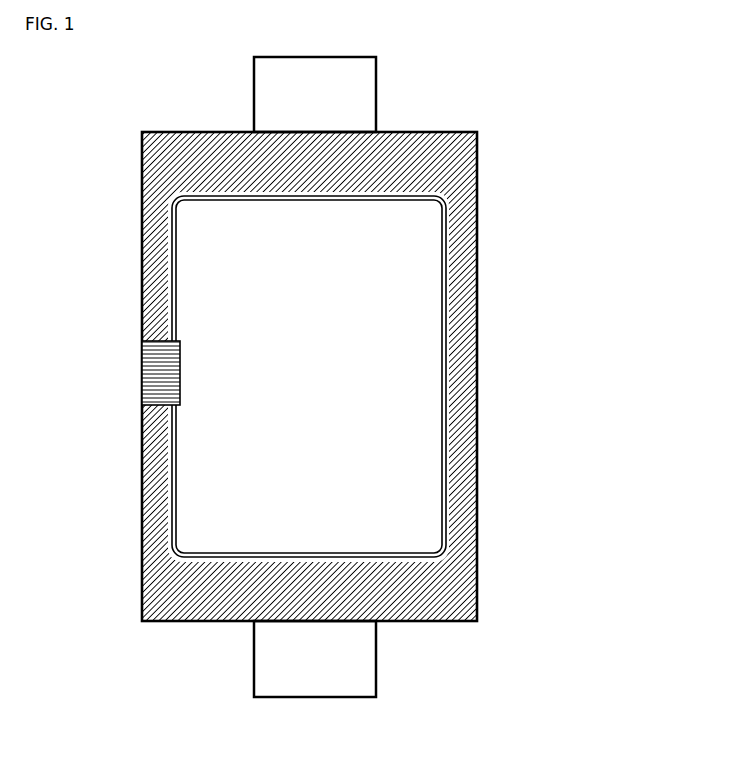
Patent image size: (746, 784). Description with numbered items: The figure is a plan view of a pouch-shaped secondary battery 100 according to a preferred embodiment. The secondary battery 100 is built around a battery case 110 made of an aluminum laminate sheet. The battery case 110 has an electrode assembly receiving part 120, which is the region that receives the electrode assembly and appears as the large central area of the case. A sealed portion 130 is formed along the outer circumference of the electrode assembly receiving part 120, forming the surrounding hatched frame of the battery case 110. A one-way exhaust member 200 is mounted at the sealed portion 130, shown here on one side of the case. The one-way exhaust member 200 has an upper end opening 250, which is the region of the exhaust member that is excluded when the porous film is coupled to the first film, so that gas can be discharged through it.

The secondary battery 100 is at (118, 78).
The battery case 110 is at (477, 256).
The electrode assembly receiving part 120 is at (445, 435).
The sealed portion 130 is at (157, 182).
The one-way exhaust member 200 is at (148, 337).
The upper end opening 250 is at (142, 375).